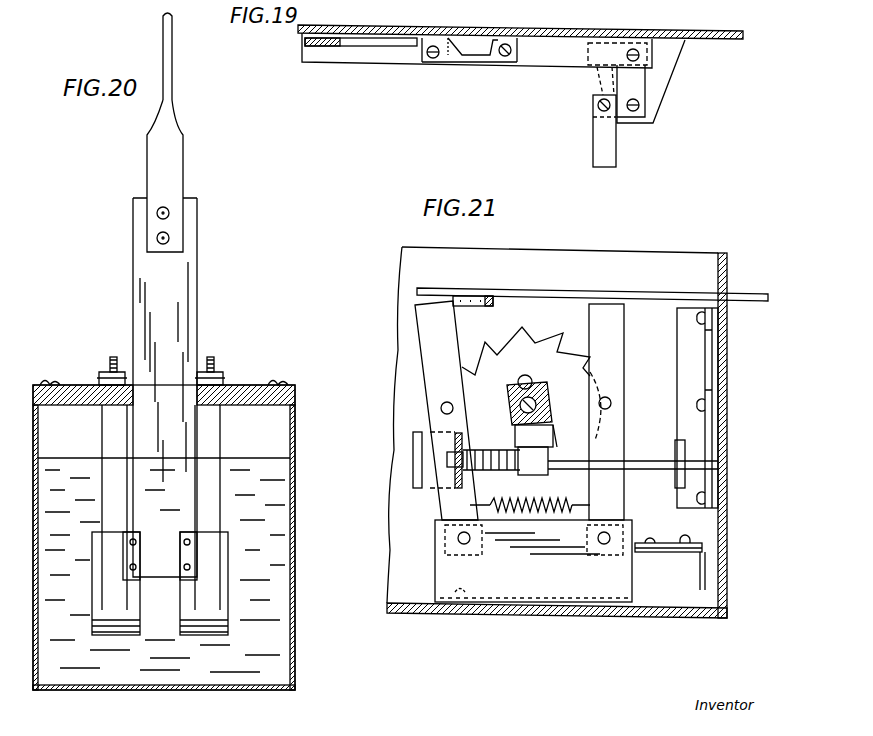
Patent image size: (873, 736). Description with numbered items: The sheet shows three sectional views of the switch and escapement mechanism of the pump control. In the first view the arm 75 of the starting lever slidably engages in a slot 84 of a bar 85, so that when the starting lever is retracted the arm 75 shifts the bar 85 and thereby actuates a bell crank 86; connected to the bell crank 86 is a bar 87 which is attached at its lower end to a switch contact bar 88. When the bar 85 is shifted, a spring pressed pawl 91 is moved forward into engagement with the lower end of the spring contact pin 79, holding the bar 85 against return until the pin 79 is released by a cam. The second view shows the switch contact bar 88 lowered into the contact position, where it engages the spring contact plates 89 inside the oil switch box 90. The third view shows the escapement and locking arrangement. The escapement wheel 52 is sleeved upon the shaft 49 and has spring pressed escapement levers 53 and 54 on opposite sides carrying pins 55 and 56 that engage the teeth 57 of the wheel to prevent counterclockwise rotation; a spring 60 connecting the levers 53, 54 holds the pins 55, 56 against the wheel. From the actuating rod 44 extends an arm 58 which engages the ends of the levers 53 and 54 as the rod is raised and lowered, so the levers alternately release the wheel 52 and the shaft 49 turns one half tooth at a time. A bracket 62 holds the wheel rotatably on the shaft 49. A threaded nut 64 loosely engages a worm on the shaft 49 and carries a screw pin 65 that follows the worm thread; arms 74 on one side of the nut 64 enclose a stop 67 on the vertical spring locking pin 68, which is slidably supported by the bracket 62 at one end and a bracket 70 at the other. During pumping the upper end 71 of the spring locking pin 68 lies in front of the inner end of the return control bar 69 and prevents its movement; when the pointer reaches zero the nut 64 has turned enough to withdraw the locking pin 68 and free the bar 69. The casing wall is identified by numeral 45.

In FIG. 21, the actuating rod 44 is at (435, 284).
In FIG. 19, the casing wall 45 is at (704, 33).
In FIG. 21, the casing wall 45 is at (728, 390).
In FIG. 21, the shaft 49 is at (553, 404).
In FIG. 21, the escapement wheel 52 is at (535, 346).
In FIG. 21, the escapement lever 53 is at (625, 351).
In FIG. 21, the escapement lever 54 is at (455, 323).
In FIG. 21, the pin 55 is at (611, 403).
In FIG. 21, the pin 56 is at (440, 408).
In FIG. 21, the teeth 57 is at (561, 341).
In FIG. 21, the arm 58 is at (495, 297).
In FIG. 21, the spring 60 is at (498, 503).
In FIG. 21, the bracket 62 is at (455, 490).
In FIG. 21, the threaded nut 64 is at (548, 389).
In FIG. 21, the screw pin 65 is at (527, 380).
In FIG. 21, the stop 67 is at (534, 436).
In FIG. 21, the spring locking pin 68 is at (548, 470).
In FIG. 21, the return control bar 69 is at (706, 448).
In FIG. 21, the bracket 70 is at (675, 447).
In FIG. 21, the upper end 71 is at (706, 466).
In FIG. 21, the arms 74 is at (556, 432).
In FIG. 19, the arm 75 is at (318, 46).
In FIG. 19, the spring contact pin 79 is at (505, 57).
In FIG. 19, the slot 84 is at (362, 46).
In FIG. 19, the bar 85 is at (558, 64).
In FIG. 19, the bell crank 86 is at (646, 93).
In FIG. 21, the bell crank 86 is at (704, 548).
In FIG. 19, the bar 87 is at (616, 153).
In FIG. 20, the bar 87 is at (176, 118).
In FIG. 20, the switch contact bar 88 is at (198, 270).
In FIG. 20, the spring contact plates 89 is at (102, 436).
In FIG. 20, the oil switch box 90 is at (296, 656).
In FIG. 19, the spring pressed pawl 91 is at (488, 58).